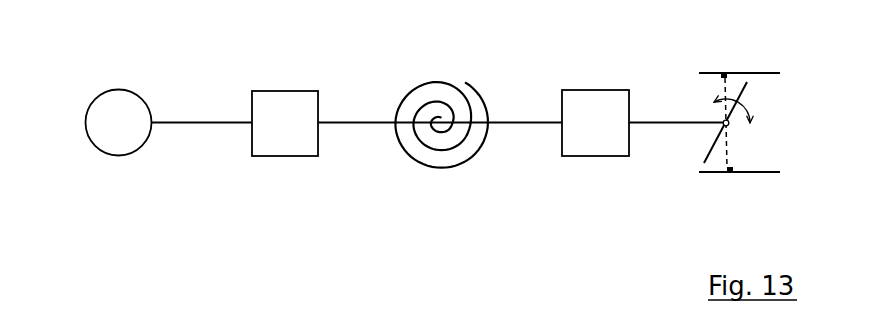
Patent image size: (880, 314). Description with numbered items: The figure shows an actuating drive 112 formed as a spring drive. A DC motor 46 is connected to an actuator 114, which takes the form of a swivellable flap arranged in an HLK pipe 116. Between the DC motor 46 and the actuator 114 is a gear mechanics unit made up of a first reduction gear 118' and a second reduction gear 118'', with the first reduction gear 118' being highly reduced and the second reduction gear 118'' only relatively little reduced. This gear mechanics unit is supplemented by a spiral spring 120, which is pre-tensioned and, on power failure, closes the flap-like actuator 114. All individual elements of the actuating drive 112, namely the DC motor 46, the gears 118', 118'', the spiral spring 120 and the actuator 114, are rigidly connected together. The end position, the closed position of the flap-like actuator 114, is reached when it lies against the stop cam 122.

The actuating drive 112 is at (108, 65).
The DC motor 46 is at (103, 138).
The first reduction gear 118' is at (285, 157).
The spiral spring 120 is at (445, 167).
The second reduction gear 118'' is at (595, 156).
The HLK pipe 116 is at (740, 72).
The actuator 114 is at (717, 157).
The stop cam 122 is at (738, 172).